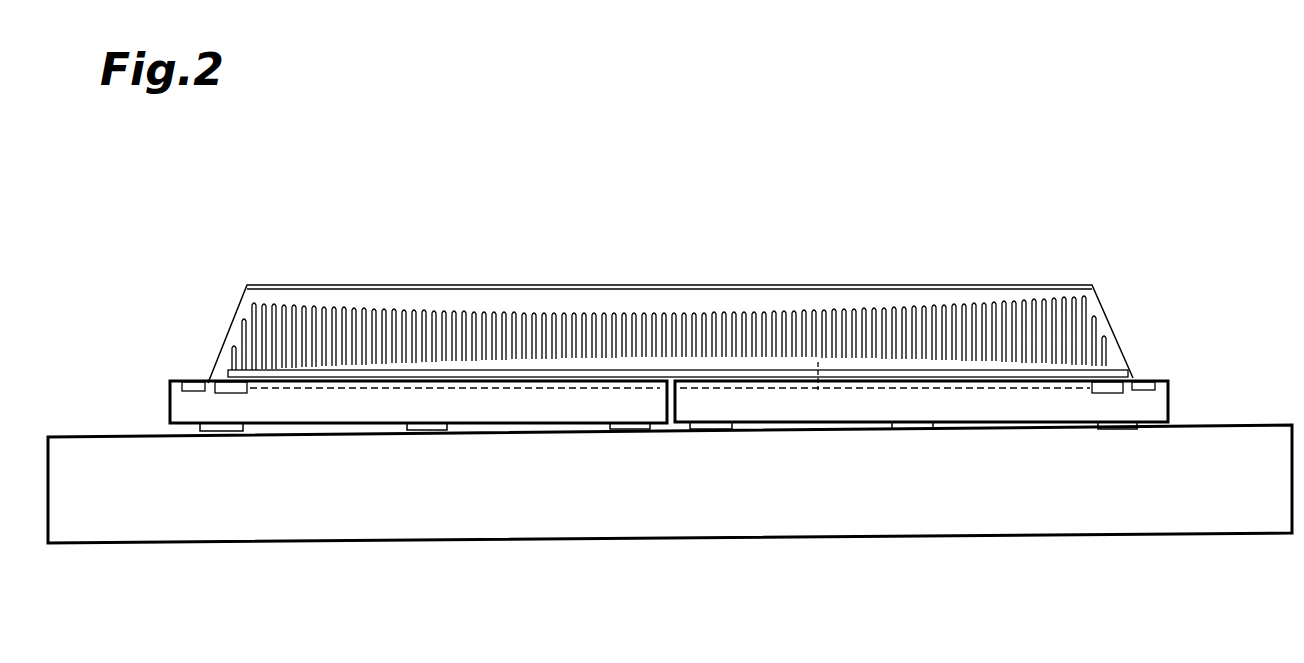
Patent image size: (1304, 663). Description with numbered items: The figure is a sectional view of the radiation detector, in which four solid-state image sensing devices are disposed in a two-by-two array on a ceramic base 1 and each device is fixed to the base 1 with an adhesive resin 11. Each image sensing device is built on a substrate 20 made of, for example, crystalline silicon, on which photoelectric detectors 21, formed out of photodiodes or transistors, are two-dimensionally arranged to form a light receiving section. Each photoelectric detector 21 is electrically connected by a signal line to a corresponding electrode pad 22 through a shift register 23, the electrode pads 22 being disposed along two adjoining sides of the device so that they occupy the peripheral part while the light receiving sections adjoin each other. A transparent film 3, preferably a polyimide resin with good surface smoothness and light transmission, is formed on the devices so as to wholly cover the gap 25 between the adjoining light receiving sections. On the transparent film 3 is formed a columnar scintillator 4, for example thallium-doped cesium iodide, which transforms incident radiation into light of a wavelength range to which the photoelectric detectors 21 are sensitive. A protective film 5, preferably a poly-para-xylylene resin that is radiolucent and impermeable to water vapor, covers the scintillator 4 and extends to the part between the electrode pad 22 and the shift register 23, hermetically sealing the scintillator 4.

The ceramic base 1 is at (1152, 512).
The transparent film 3 is at (1080, 372).
The columnar scintillator 4 is at (1085, 307).
The protective film 5 is at (1040, 288).
The adhesive resin 11 is at (913, 430).
The substrate 20 is at (1140, 405).
The photoelectric detector 21 is at (818, 362).
The electrode pad 22 is at (1147, 375).
The shift register 23 is at (208, 385).
The gap 25 is at (673, 432).